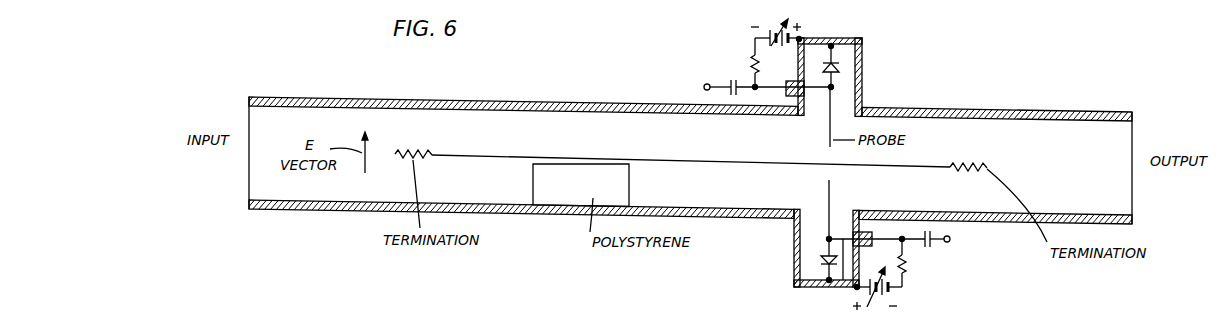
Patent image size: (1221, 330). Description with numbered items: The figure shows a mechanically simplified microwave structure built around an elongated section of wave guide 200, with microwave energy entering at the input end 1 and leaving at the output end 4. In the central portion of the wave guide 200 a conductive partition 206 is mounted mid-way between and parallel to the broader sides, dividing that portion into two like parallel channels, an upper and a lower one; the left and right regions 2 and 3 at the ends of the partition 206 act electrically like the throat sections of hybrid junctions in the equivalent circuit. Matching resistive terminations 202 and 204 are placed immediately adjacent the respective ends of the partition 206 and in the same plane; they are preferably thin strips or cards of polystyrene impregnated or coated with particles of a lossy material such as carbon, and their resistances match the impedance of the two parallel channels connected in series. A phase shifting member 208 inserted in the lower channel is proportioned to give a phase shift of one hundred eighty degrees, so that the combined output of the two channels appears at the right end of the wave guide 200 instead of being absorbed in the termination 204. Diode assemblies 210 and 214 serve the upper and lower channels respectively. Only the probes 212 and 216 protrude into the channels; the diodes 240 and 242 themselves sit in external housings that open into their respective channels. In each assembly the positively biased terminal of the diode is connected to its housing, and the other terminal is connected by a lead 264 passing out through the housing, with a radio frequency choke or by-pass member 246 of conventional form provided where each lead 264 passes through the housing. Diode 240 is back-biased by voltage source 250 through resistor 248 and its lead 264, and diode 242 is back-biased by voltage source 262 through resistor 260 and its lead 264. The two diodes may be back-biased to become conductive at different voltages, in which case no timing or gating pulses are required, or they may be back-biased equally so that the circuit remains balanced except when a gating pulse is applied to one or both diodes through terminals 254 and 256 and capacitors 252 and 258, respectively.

The wave guide 200 is at (305, 97).
The resistive termination 202 is at (413, 158).
The resistive termination 204 is at (958, 170).
The conductive partition 206 is at (484, 157).
The phase shifting member 208 is at (564, 198).
The diode assembly 210 is at (863, 88).
The probe 212 is at (828, 128).
The diode assembly 214 is at (793, 240).
The probe 216 is at (828, 184).
The diode 240 is at (841, 70).
The diode 242 is at (815, 260).
The radio frequency choke or by-pass member 246 is at (790, 97).
The resistor 248 is at (752, 68).
The voltage source 250 is at (790, 22).
The capacitor 252 is at (731, 79).
The terminal 254 is at (702, 87).
The terminal 256 is at (952, 240).
The capacitor 258 is at (929, 250).
The resistor 260 is at (904, 263).
The voltage source 262 is at (874, 306).
The lead 264 is at (768, 88).
The input section 1 is at (216, 177).
The second section 2 is at (449, 193).
The third section 3 is at (947, 196).
The output section 4 is at (1183, 203).